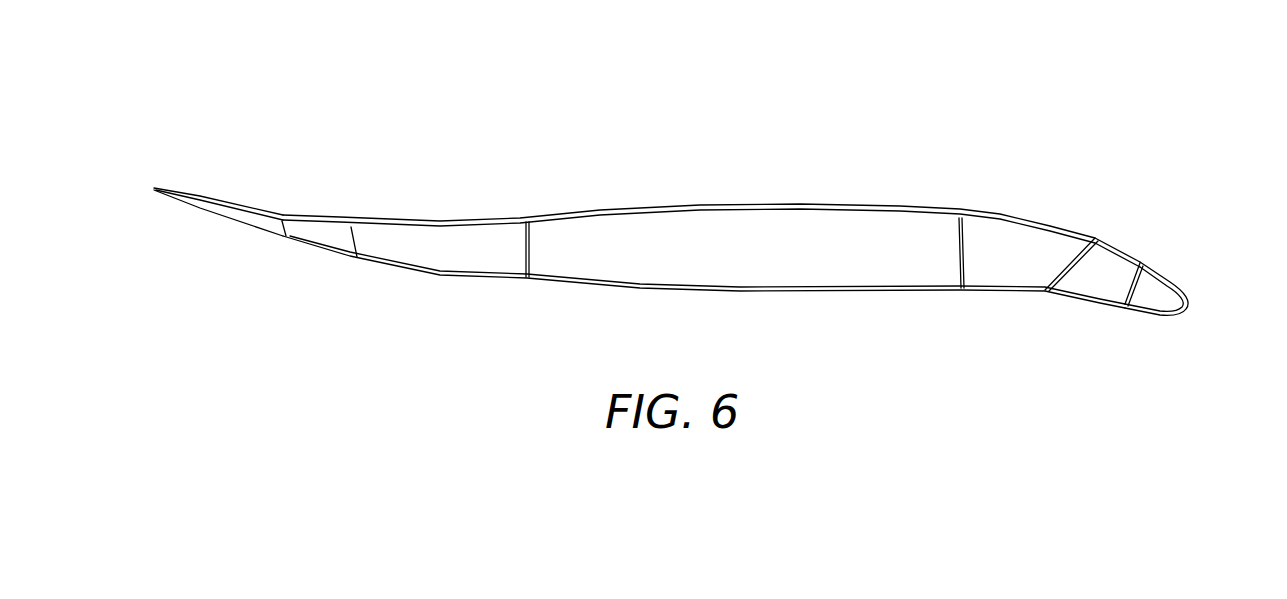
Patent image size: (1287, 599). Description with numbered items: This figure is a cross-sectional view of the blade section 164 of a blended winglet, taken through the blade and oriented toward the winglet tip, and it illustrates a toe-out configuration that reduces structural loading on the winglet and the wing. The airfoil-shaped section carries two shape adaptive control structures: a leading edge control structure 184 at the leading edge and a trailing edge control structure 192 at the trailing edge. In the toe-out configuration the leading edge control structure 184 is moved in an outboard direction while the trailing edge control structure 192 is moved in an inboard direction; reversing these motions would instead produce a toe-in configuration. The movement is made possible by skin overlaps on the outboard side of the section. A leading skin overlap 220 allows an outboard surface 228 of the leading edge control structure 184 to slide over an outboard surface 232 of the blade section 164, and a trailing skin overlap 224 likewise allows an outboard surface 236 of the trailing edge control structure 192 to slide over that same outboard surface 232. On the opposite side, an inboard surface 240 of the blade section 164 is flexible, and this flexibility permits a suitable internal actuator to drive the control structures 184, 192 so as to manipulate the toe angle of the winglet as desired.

The blade section 164 is at (731, 179).
The leading edge control structure 184 is at (1137, 233).
The trailing edge control structure 192 is at (257, 191).
The leading skin overlap 220 is at (970, 290).
The trailing skin overlap 224 is at (517, 285).
The outboard surface of the leading edge control structure 228 is at (1115, 303).
The outboard surface of the blade section 232 is at (748, 293).
The outboard surface of the trailing edge control structure 236 is at (287, 240).
The inboard surface of the blade section 240 is at (815, 202).